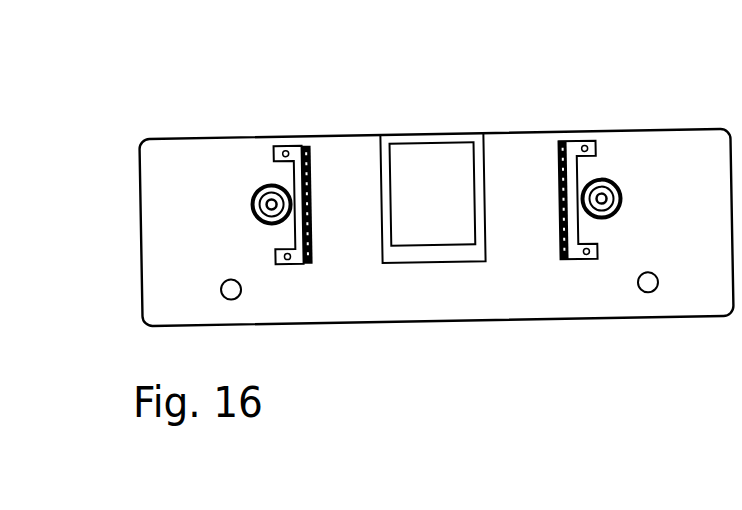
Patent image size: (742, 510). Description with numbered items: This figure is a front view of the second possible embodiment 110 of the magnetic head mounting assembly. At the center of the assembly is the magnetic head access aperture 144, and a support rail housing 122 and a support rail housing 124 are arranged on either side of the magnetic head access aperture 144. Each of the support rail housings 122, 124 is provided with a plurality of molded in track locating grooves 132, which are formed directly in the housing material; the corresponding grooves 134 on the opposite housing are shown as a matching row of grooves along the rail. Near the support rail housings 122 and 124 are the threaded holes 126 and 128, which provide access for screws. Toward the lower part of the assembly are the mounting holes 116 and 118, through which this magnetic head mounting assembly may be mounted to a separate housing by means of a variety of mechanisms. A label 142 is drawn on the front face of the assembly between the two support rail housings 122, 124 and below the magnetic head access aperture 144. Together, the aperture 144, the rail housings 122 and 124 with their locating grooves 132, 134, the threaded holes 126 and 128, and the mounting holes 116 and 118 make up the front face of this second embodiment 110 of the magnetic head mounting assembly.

The second possible embodiment of the magnetic head mounting assembly 110 is at (178, 123).
The mounting hole 116 is at (219, 290).
The mounting hole 118 is at (651, 289).
The support rail housing 122 is at (293, 146).
The support rail housing 124 is at (577, 140).
The threaded hole 126 is at (251, 207).
The threaded hole 128 is at (612, 178).
The molded in track locating grooves 132 is at (304, 212).
The right connector contact strip 134 is at (565, 212).
The product label 142 is at (433, 300).
The magnetic head access aperture 144 is at (427, 168).